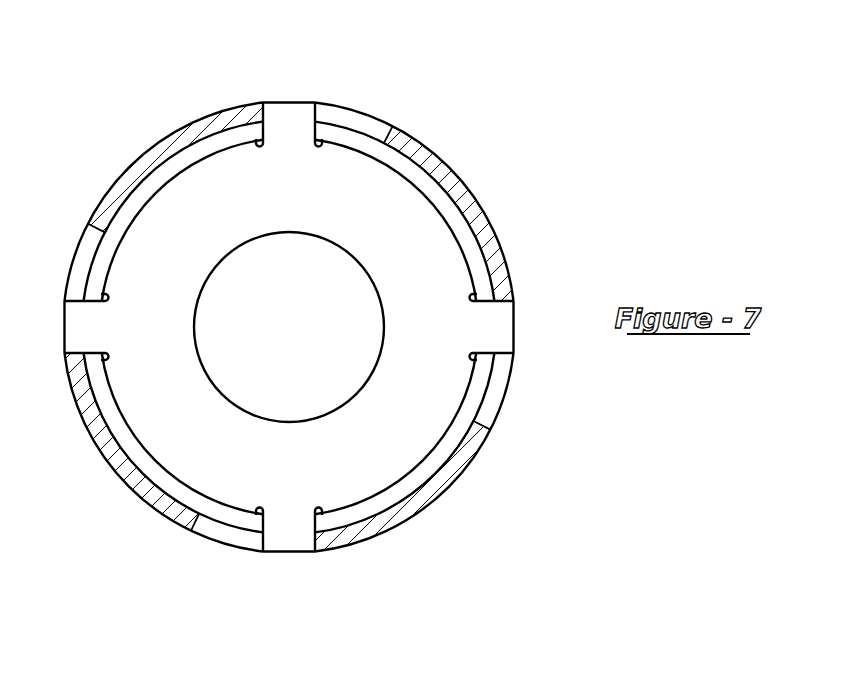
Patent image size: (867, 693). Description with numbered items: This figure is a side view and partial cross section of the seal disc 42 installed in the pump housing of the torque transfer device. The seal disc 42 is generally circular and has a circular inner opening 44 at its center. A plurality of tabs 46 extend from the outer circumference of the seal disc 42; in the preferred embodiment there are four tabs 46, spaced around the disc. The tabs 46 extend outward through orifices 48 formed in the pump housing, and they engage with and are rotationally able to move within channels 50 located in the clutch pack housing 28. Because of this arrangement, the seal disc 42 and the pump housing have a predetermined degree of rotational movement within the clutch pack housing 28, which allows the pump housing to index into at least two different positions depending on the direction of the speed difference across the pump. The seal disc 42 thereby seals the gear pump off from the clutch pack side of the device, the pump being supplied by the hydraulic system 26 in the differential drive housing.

The hydraulic system 26 is at (223, 510).
The clutch pack housing 28 is at (412, 505).
The seal disc 42 is at (387, 215).
The inner opening 44 is at (368, 307).
The tabs 46 is at (77, 320).
The orifices 48 is at (317, 140).
The channels 50 is at (490, 403).